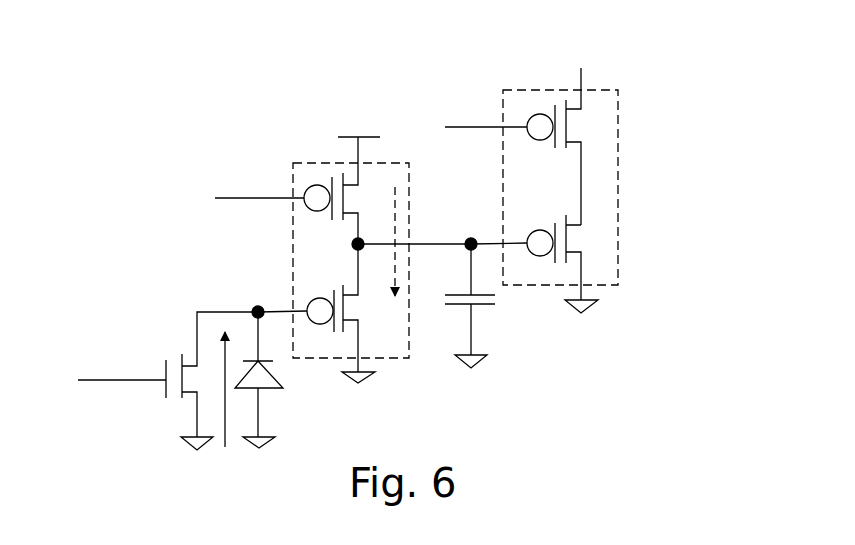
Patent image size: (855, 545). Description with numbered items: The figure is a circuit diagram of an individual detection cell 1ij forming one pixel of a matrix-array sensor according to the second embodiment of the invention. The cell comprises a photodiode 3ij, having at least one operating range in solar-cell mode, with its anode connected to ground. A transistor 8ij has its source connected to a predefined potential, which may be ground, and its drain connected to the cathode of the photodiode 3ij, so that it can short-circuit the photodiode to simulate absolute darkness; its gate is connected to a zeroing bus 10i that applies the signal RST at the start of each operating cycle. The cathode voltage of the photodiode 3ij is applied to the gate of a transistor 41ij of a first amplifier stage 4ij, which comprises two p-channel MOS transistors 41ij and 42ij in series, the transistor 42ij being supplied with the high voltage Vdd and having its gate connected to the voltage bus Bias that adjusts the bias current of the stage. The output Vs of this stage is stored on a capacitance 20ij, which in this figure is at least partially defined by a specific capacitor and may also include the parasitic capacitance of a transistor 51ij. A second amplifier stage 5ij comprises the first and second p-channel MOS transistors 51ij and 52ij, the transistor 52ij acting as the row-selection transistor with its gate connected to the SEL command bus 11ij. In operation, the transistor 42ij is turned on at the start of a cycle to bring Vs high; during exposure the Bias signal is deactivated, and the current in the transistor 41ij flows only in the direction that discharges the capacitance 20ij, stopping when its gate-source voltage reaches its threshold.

The individual detection cell 1ij is at (656, 60).
The zeroing bus 10i is at (120, 386).
The transistor 8ij is at (176, 400).
The photodiode 3ij is at (286, 390).
The first amplifier stage 4ij is at (292, 276).
The transistor 42ij is at (333, 171).
The transistor 41ij is at (358, 312).
The capacitance 20ij is at (484, 310).
The second amplifier stage 5ij is at (627, 287).
The selection line SEL 11ij is at (513, 124).
The transistor 52ij is at (580, 122).
The transistor 51ij is at (580, 238).